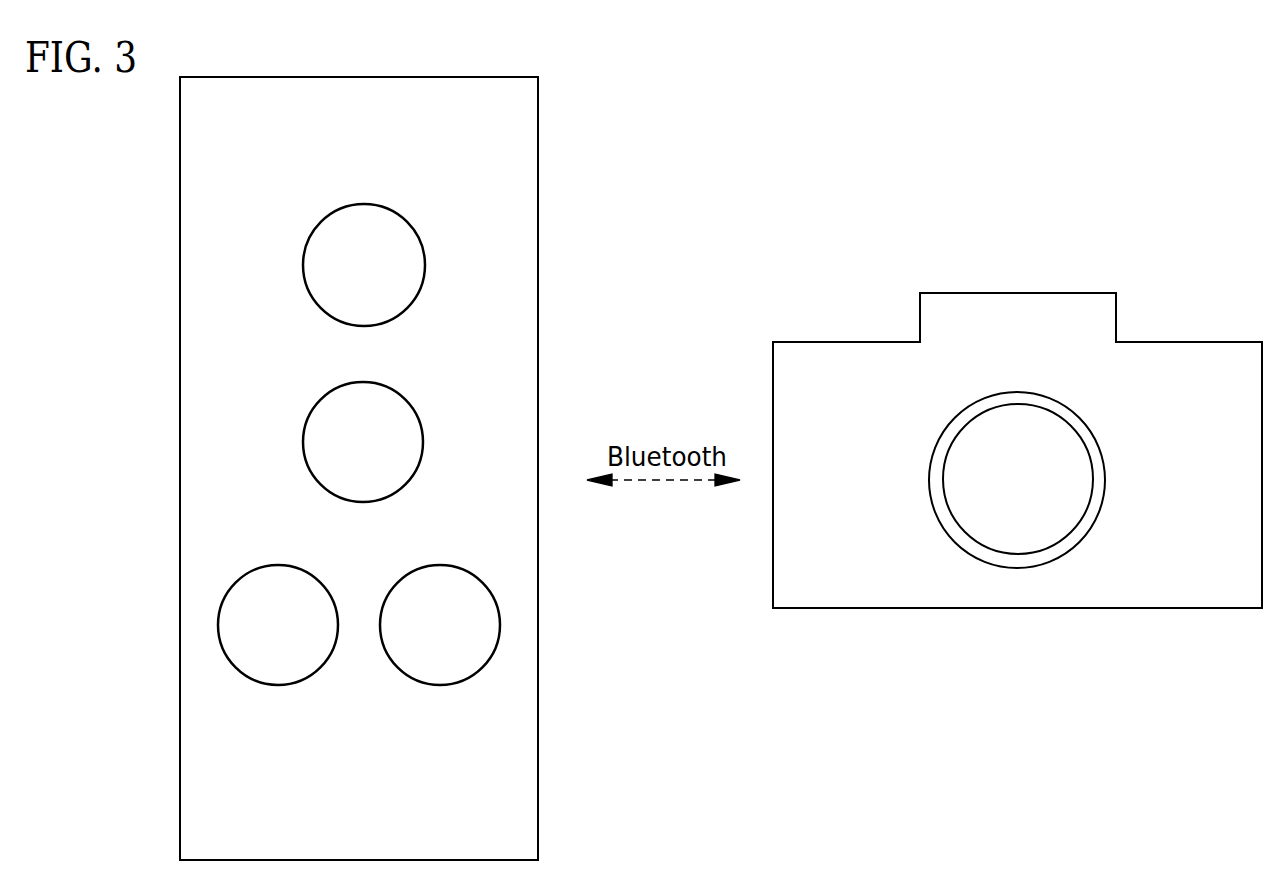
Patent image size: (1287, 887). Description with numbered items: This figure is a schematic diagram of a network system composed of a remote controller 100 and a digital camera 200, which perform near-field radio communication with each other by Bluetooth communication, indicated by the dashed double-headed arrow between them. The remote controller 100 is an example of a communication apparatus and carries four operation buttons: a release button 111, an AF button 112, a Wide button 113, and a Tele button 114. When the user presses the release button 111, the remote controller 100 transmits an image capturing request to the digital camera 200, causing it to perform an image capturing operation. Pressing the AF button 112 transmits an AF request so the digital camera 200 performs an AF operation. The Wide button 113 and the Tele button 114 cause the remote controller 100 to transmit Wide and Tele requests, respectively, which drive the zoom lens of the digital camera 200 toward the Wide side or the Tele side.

The remote controller 100 is at (360, 77).
The release button 111 is at (369, 205).
The AF button 112 is at (414, 375).
The Wide button 113 is at (256, 569).
The Tele button 114 is at (477, 550).
The digital camera 200 is at (1068, 275).